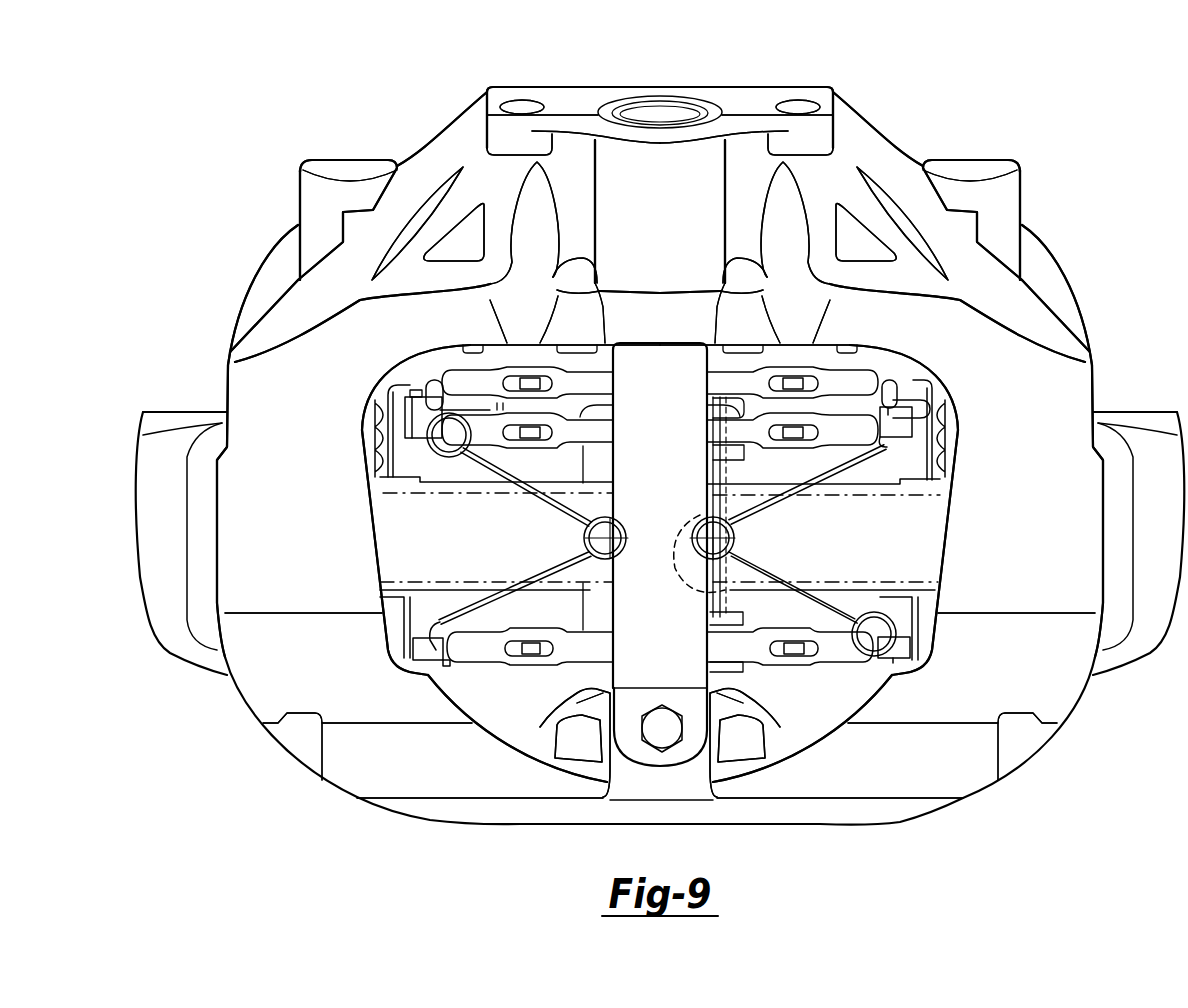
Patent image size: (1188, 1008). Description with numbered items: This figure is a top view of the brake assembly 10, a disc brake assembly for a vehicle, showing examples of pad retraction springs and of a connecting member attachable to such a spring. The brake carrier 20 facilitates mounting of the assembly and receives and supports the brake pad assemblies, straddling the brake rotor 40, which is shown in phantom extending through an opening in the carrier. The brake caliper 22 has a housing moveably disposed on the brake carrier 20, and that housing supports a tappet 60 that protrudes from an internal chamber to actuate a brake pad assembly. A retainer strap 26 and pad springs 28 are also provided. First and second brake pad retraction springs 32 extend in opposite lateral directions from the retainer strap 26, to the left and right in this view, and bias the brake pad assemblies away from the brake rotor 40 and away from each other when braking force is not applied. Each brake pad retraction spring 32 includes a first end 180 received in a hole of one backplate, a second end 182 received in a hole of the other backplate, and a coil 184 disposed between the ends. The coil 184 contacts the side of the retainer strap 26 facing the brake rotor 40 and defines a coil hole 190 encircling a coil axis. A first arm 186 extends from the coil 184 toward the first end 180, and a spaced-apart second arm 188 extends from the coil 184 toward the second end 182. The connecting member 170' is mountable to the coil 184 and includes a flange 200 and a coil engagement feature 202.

The brake assembly 10 is at (256, 196).
The brake carrier 20 is at (145, 412).
The brake caliper 22 is at (462, 108).
The retainer strap 26 is at (649, 638).
The pad springs 28 is at (578, 395).
The brake pad retraction spring 32 is at (740, 573).
The brake rotor 40 is at (377, 486).
The tappet 60 is at (920, 405).
The connecting member 170' is at (661, 534).
The first end 180 is at (422, 393).
The second end 182 is at (890, 382).
The coil 184 is at (584, 538).
The first arm 186 is at (548, 497).
The second arm 188 is at (550, 578).
The coil hole 190 is at (606, 532).
The flange 200 is at (697, 532).
The coil engagement feature 202 is at (733, 521).